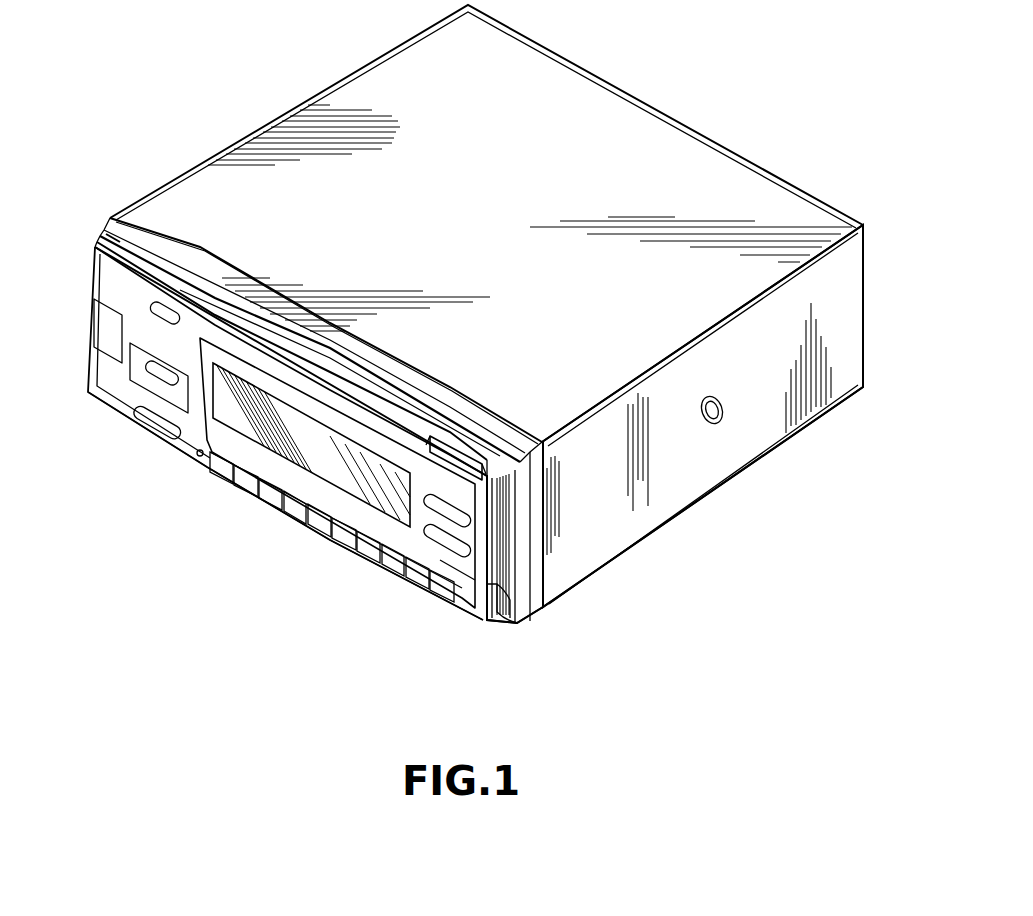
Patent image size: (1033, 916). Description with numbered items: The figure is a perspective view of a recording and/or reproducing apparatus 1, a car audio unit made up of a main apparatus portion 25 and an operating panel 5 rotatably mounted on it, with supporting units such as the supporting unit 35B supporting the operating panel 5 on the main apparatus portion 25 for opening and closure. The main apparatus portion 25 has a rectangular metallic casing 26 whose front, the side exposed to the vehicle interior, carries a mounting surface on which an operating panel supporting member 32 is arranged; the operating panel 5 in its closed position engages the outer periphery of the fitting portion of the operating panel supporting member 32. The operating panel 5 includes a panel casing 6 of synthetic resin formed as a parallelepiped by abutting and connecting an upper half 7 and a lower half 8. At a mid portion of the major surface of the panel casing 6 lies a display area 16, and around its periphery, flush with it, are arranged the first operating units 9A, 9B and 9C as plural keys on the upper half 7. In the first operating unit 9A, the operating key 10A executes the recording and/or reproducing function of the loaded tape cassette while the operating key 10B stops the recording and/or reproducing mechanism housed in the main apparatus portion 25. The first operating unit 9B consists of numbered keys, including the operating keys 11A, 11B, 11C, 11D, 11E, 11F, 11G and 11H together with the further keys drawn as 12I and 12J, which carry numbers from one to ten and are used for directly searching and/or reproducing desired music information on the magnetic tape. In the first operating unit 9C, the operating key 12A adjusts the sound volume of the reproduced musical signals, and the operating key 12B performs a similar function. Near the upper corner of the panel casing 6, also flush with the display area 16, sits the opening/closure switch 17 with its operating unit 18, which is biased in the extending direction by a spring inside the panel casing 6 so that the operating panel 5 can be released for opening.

The recording and/or reproducing apparatus 1 is at (717, 64).
The main apparatus portion 25 is at (785, 190).
The casing 26 is at (842, 212).
The lower half 8 is at (105, 236).
The upper half 7 is at (95, 260).
The panel casing 6 is at (102, 397).
The first operating unit 9A is at (130, 414).
The first operating unit 9B is at (312, 549).
The first operating unit 9C is at (471, 579).
The operating key 10A is at (97, 335).
The operating key 10B is at (160, 372).
The display area 16 is at (262, 415).
The opening/closure switch 17 is at (448, 444).
The operating unit 18 is at (478, 458).
The operating key 12A is at (465, 513).
The operating key 12B is at (462, 556).
The operating panel supporting member 32 is at (538, 543).
The operating panel 5 is at (408, 651).
The supporting unit 35B is at (512, 640).
The operating key 11A is at (228, 480).
The operating key 11B is at (252, 494).
The operating key 11C is at (272, 506).
The operating key 11D is at (298, 520).
The operating key 11E is at (321, 532).
The operating key 11F is at (345, 546).
The operating key 11G is at (369, 558).
The operating key 11H is at (394, 572).
The preset button 9 12I is at (418, 585).
The preset button 10 12J is at (443, 598).